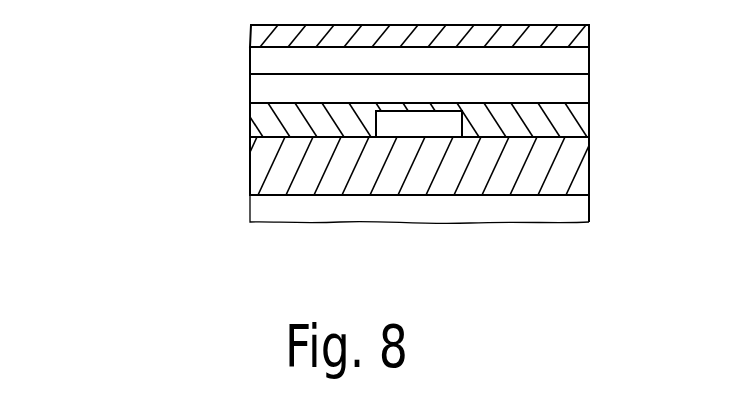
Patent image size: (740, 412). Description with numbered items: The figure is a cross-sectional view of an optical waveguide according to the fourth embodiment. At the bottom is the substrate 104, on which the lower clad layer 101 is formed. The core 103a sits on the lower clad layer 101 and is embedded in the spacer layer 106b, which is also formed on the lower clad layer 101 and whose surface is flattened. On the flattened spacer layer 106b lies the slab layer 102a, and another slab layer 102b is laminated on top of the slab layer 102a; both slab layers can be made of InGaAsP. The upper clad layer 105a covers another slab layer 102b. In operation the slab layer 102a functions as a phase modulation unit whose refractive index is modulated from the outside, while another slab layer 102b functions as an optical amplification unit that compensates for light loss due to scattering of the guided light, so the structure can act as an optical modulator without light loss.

The lower clad layer 101 is at (590, 172).
The slab layer 102a is at (590, 90).
The another slab layer 102b is at (590, 62).
The core 103a is at (393, 122).
The substrate 104 is at (590, 207).
The upper clad layer 105a is at (590, 34).
The spacer layer 106b is at (590, 123).